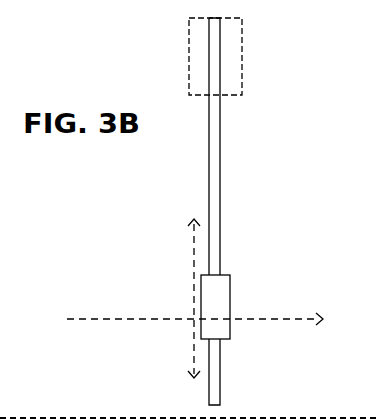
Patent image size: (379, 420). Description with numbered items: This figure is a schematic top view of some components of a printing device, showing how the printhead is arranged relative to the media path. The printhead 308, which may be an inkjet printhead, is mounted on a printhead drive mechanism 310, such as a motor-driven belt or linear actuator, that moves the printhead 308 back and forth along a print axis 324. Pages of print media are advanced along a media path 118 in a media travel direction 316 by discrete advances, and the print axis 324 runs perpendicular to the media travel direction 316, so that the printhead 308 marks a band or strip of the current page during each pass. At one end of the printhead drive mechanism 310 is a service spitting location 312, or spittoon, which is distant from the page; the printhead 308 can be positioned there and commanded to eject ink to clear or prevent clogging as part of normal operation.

The media path 118 is at (104, 320).
The printhead 308 is at (229, 273).
The printhead drive mechanism 310 is at (221, 192).
The service spitting location 312 is at (188, 58).
The media travel direction 316 is at (308, 309).
The print axis 324 is at (191, 244).